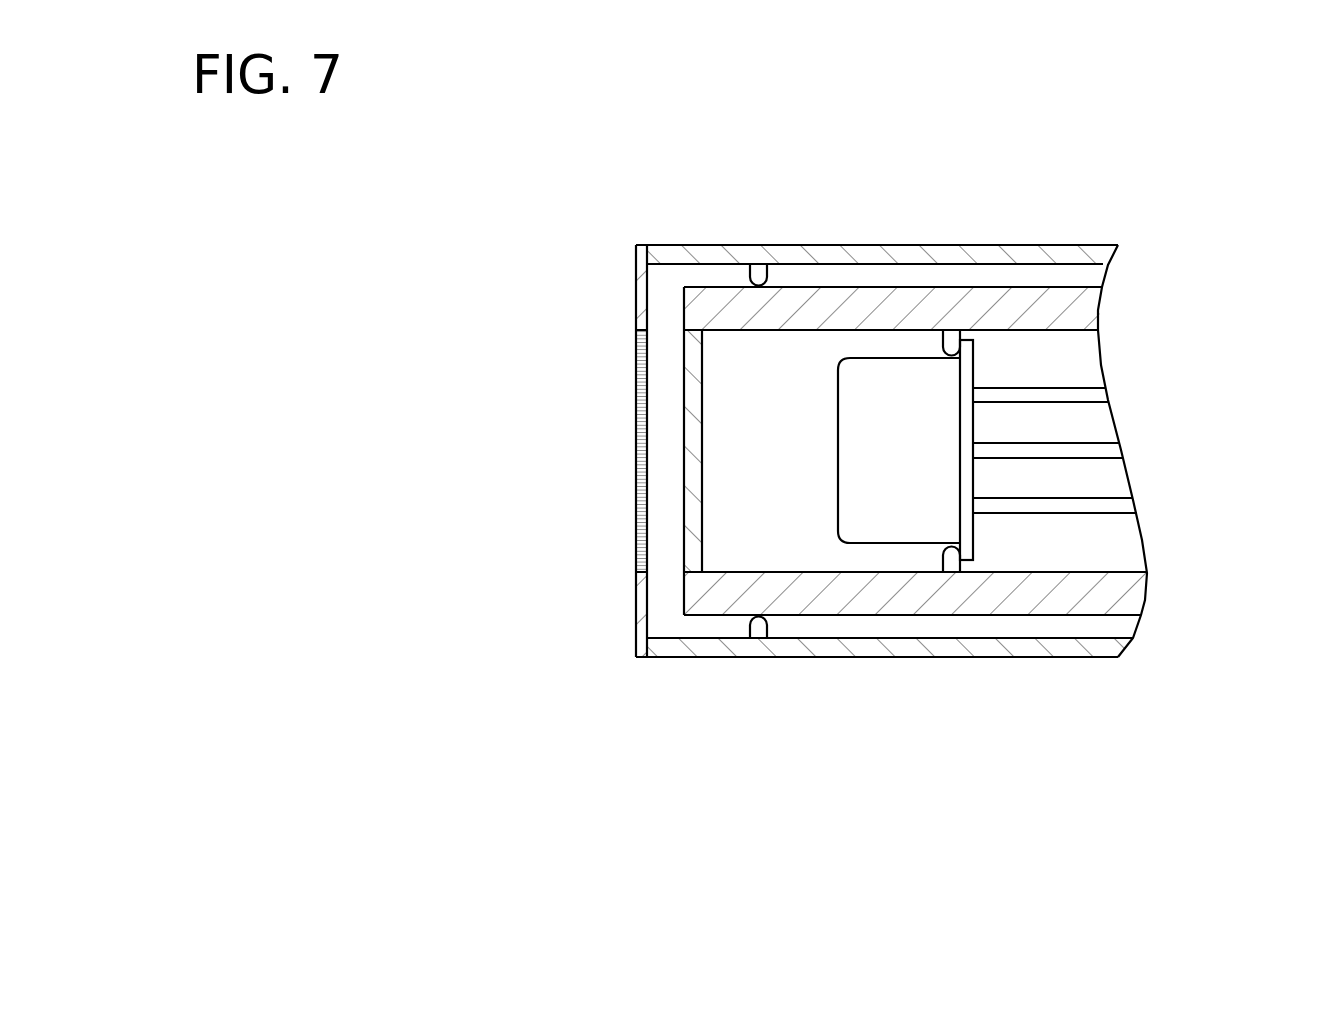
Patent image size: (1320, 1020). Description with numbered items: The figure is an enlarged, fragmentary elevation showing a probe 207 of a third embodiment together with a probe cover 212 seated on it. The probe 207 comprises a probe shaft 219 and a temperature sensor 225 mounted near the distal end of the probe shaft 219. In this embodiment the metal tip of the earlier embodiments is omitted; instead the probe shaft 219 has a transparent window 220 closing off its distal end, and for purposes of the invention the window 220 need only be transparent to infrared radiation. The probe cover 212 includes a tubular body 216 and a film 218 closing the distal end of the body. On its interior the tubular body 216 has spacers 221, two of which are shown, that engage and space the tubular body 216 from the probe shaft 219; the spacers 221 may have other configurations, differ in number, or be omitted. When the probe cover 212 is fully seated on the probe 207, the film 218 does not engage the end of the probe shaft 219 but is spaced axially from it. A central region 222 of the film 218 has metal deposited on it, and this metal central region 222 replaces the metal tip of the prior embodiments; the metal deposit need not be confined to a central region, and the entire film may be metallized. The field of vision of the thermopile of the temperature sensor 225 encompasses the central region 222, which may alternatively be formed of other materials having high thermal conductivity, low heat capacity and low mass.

The probe cover 212 is at (1052, 663).
The tubular body 216 is at (889, 247).
The probe 207 is at (982, 268).
The probe shaft 219 is at (1065, 287).
The transparent window 220 is at (693, 370).
The spacers 221 is at (757, 277).
The central region 222 is at (636, 458).
The film 218 is at (636, 597).
The temperature sensor 225 is at (833, 557).